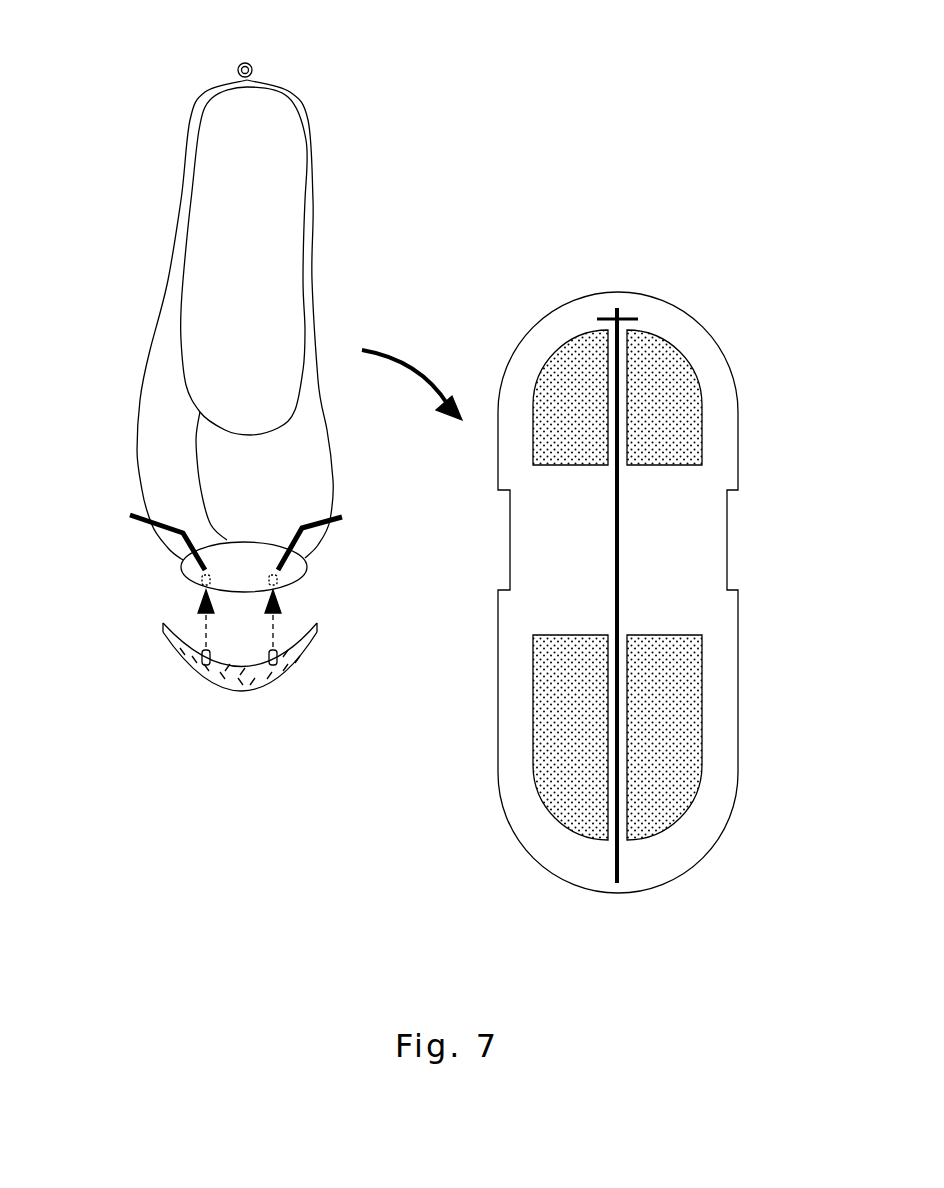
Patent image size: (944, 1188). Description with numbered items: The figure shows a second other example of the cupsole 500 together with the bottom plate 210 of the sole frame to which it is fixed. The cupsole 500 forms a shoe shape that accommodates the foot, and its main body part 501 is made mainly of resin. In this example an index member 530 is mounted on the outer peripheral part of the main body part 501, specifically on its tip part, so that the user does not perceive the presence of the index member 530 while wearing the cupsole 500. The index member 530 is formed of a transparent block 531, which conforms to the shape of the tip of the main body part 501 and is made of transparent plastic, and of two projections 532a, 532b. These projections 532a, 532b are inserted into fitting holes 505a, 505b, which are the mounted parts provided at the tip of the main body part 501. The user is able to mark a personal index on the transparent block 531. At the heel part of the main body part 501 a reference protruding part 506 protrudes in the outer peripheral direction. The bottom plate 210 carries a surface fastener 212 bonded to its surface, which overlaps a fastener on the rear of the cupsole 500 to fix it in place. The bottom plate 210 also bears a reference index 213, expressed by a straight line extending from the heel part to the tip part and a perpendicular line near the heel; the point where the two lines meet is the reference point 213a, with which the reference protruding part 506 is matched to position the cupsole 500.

The cupsole 500 is at (157, 86).
The main body part 501 is at (295, 170).
The reference protruding part 506 is at (249, 63).
The fitting hole 505a is at (131, 536).
The fitting hole 505b is at (350, 536).
The projection 532a is at (203, 652).
The projection 532b is at (277, 652).
The index member 530 is at (152, 688).
The transparent block 531 is at (292, 677).
The bottom plate 210 is at (746, 331).
The surface fastener 212 is at (700, 425).
The reference index 213 is at (620, 866).
The reference point 213a is at (613, 317).